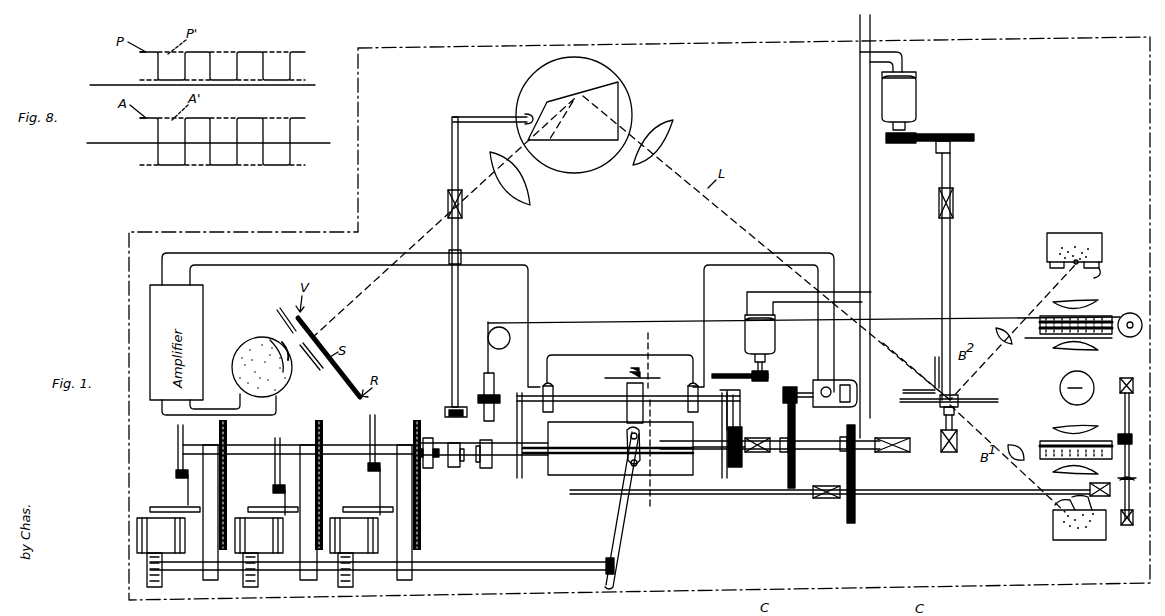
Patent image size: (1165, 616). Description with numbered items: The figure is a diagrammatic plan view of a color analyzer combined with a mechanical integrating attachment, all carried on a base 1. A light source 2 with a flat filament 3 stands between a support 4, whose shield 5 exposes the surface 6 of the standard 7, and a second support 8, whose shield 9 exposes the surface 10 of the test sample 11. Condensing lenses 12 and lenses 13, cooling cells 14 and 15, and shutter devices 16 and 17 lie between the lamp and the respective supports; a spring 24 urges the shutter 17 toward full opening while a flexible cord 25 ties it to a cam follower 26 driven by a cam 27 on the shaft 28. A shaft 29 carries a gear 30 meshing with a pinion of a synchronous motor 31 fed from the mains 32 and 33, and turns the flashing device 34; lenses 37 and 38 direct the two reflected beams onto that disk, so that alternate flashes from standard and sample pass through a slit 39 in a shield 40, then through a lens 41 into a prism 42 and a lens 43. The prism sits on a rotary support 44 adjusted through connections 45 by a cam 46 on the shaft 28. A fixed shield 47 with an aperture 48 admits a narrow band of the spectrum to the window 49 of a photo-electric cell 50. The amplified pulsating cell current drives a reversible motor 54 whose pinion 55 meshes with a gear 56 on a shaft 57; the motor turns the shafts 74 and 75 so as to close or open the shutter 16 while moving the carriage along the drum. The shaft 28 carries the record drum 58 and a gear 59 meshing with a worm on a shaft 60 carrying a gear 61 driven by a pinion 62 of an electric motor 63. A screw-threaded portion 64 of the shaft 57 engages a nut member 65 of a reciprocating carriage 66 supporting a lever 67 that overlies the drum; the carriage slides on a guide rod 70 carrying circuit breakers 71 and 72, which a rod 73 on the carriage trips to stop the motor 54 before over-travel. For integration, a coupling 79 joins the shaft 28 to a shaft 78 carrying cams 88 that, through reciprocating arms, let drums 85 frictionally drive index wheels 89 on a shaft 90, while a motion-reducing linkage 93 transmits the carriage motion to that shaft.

The base 1 is at (706, 28).
The light source 2 is at (1088, 378).
The flat filament 3 is at (1070, 388).
The support 4 is at (1070, 536).
The shield 5 is at (1058, 503).
The surface 6 is at (1070, 497).
The standard 7 is at (1085, 527).
The second support 8 is at (1100, 240).
The shield 9 is at (1099, 268).
The surface 10 is at (1075, 265).
The test sample 11 is at (1074, 245).
The condensing lenses 12 is at (1086, 428).
The lenses 13 is at (1090, 302).
The cooling cell 14 is at (1118, 438).
The cooling cell 15 is at (1100, 318).
The shutter device 16 is at (1046, 441).
The shutter device 17 is at (1132, 336).
The spring 24 is at (1030, 339).
The flexible cord 25 is at (900, 316).
The cam follower 26 is at (495, 382).
The cam 27 is at (486, 468).
The shaft 28 is at (507, 458).
The shaft 29 is at (952, 252).
The gear 30 is at (962, 132).
The synchronous electric motor 31 is at (912, 90).
The main 32 is at (857, 28).
The main 33 is at (873, 28).
The flashing device 34 is at (978, 395).
The lens 37 is at (1016, 463).
The lens 38 is at (997, 332).
The slit 39 is at (915, 389).
The shield 40 is at (933, 364).
The lens 41 is at (672, 127).
The prism 42 is at (614, 98).
The lens 43 is at (529, 190).
The rotary support 44 is at (612, 72).
The connections 45 is at (462, 114).
The cam 46 is at (455, 468).
The shield 47 is at (283, 308).
The aperture 48 is at (312, 368).
The window 49 is at (283, 342).
The photo-electric cell 50 is at (248, 355).
The reversible motor 54 is at (832, 407).
The pinion 55 is at (790, 386).
The gear 56 is at (786, 460).
The shaft 57 is at (818, 450).
The record drum 58 is at (678, 468).
The gear 59 is at (743, 428).
The shaft 60 is at (741, 404).
The gear 61 is at (725, 372).
The pinion 62 is at (768, 370).
The electric motor 63 is at (776, 333).
The screw-threaded portion 64 is at (588, 458).
The nut member 65 is at (645, 440).
The reciprocating carriage 66 is at (626, 411).
The lever 67 is at (636, 470).
The guide rod 70 is at (580, 398).
The circuit breaker 71 is at (553, 392).
The circuit breaker 72 is at (690, 392).
The rod 73 is at (620, 379).
The shaft 74 is at (905, 496).
The shaft 75 is at (1132, 388).
The shaft 78 is at (335, 450).
The coupling 79 is at (427, 437).
The drum 85 is at (265, 530).
The cam 88 is at (176, 436).
The index wheel 89 is at (157, 585).
The shaft 90 is at (503, 562).
The motion-reducing linkage 93 is at (610, 530).